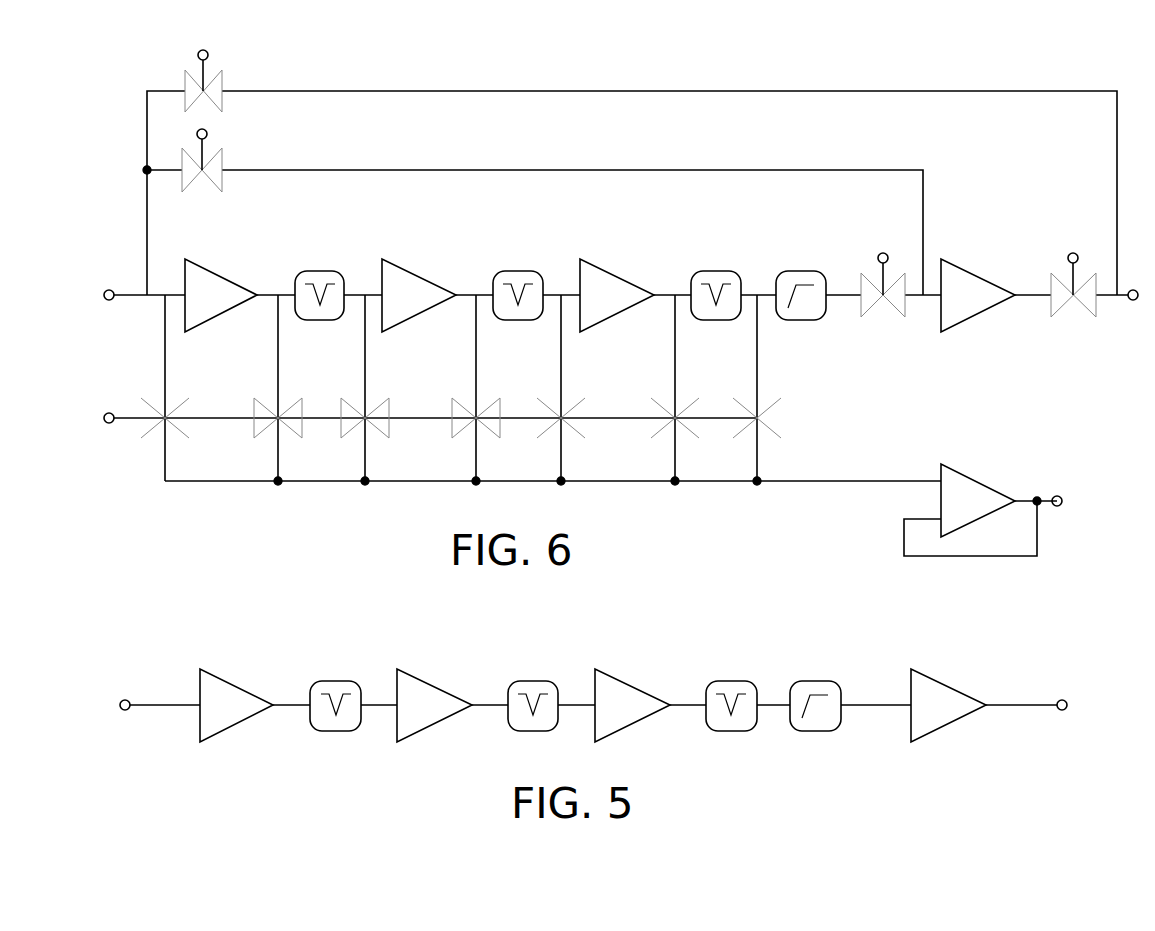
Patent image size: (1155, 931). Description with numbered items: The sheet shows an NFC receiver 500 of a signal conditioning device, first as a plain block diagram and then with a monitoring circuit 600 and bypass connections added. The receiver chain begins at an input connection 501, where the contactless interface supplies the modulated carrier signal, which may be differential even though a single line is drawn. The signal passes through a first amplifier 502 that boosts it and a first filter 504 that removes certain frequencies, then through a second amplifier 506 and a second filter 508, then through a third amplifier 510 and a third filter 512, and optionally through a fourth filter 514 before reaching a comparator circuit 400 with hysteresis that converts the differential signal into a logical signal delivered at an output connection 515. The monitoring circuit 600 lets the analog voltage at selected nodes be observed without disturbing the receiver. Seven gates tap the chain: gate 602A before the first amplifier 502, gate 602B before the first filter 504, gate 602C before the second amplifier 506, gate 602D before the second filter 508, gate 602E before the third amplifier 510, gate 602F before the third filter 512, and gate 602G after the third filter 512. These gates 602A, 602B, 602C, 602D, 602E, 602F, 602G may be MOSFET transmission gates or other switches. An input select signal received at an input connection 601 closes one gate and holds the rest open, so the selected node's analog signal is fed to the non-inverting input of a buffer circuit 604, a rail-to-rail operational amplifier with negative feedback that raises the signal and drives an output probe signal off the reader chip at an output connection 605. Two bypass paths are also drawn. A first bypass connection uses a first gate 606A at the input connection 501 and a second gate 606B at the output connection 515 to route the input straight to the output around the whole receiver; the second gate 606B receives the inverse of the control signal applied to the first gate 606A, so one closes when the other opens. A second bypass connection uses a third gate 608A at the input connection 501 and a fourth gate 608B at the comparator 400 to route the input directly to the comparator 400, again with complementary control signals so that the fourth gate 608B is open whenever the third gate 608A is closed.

In FIG. 6, the comparator circuit 400 is at (960, 268).
In FIG. 5, the comparator circuit 400 is at (927, 676).
In FIG. 6, the NFC receiver 500 is at (893, 374).
In FIG. 5, the NFC receiver 500 is at (328, 805).
In FIG. 6, the input connection 501 is at (110, 310).
In FIG. 5, the input connection 501 is at (126, 722).
In FIG. 6, the first amplifier 502 is at (205, 265).
In FIG. 5, the first amplifier 502 is at (222, 678).
In FIG. 6, the first filter 504 is at (312, 270).
In FIG. 5, the first filter 504 is at (328, 681).
In FIG. 6, the second amplifier 506 is at (400, 264).
In FIG. 5, the second amplifier 506 is at (414, 674).
In FIG. 6, the second filter 508 is at (505, 271).
In FIG. 5, the second filter 508 is at (524, 681).
In FIG. 6, the third amplifier 510 is at (598, 264).
In FIG. 5, the third amplifier 510 is at (615, 678).
In FIG. 6, the third filter 512 is at (705, 271).
In FIG. 5, the third filter 512 is at (722, 681).
In FIG. 6, the fourth filter 514 is at (790, 271).
In FIG. 5, the fourth filter 514 is at (806, 681).
In FIG. 6, the output connection 515 is at (1126, 312).
In FIG. 5, the output connection 515 is at (1057, 722).
In FIG. 6, the monitoring circuit 600 is at (222, 517).
In FIG. 6, the input connection 601 is at (108, 432).
In FIG. 6, the gate 602A is at (178, 405).
In FIG. 6, the gate 602B is at (291, 405).
In FIG. 6, the gate 602C is at (381, 405).
In FIG. 6, the gate 602D is at (490, 405).
In FIG. 6, the gate 602E is at (577, 405).
In FIG. 6, the gate 602F is at (690, 405).
In FIG. 6, the gate 602G is at (775, 405).
In FIG. 6, the buffer circuit 604 is at (960, 472).
In FIG. 6, the output connection 605 is at (1068, 517).
In FIG. 6, the first gate 606A is at (221, 72).
In FIG. 6, the second gate 606B is at (1095, 270).
In FIG. 6, the third gate 608A is at (221, 150).
In FIG. 6, the fourth gate 608B is at (905, 268).